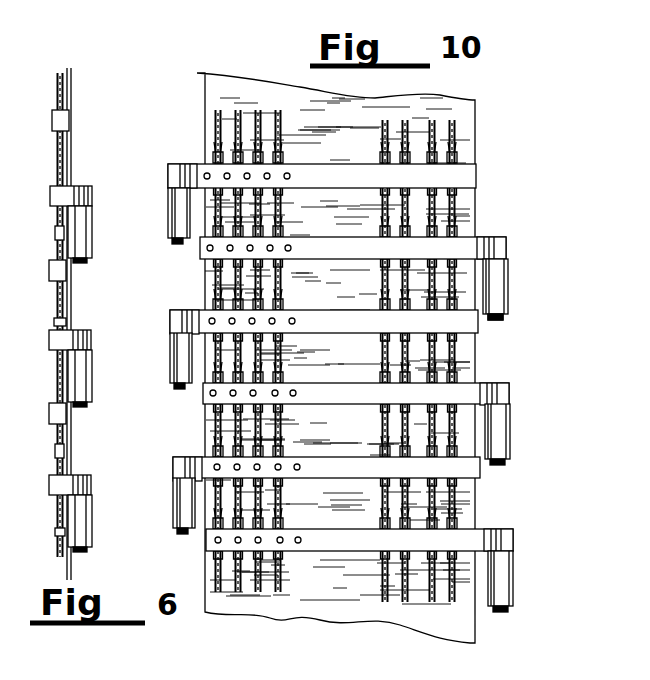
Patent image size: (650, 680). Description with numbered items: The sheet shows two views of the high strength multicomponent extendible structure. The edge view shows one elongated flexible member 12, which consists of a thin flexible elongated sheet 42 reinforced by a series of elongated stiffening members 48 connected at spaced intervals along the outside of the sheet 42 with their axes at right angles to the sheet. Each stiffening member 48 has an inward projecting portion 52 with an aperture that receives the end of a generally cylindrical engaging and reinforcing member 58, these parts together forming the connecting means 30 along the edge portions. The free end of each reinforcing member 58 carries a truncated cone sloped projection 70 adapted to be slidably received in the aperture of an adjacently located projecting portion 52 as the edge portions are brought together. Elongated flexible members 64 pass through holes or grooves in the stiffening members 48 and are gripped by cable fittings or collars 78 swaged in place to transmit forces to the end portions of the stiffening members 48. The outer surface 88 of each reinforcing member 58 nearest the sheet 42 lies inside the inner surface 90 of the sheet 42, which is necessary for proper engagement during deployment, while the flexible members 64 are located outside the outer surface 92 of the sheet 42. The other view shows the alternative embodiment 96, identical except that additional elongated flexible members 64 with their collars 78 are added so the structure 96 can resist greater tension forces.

In FIG. 10, the elongated flexible member 12 is at (389, 103).
In FIG. 10, the connecting means 30 is at (514, 326).
In FIG. 6, the thin flexible elongated sheet 42 is at (72, 82).
In FIG. 10, the thin flexible elongated sheet 42 is at (310, 580).
In FIG. 10, the elongated stiffening member 48 is at (358, 240).
In FIG. 6, the projecting portion 52 is at (88, 186).
In FIG. 10, the projecting portion 52 is at (496, 237).
In FIG. 6, the engaging and reinforcing member 58 is at (93, 236).
In FIG. 10, the engaging and reinforcing member 58 is at (170, 206).
In FIG. 6, the elongated flexible member 64 is at (60, 73).
In FIG. 10, the elongated flexible member 64 is at (278, 108).
In FIG. 6, the truncated cone sloped projection 70 is at (84, 257).
In FIG. 6, the cable fitting or collar 78 is at (60, 326).
In FIG. 10, the cable fitting or collar 78 is at (283, 165).
In FIG. 6, the outer surface 88 is at (58, 532).
In FIG. 6, the inner surface 90 is at (68, 125).
In FIG. 6, the outer surface 92 is at (58, 228).
In FIG. 10, the alternative embodiment 96 is at (459, 89).